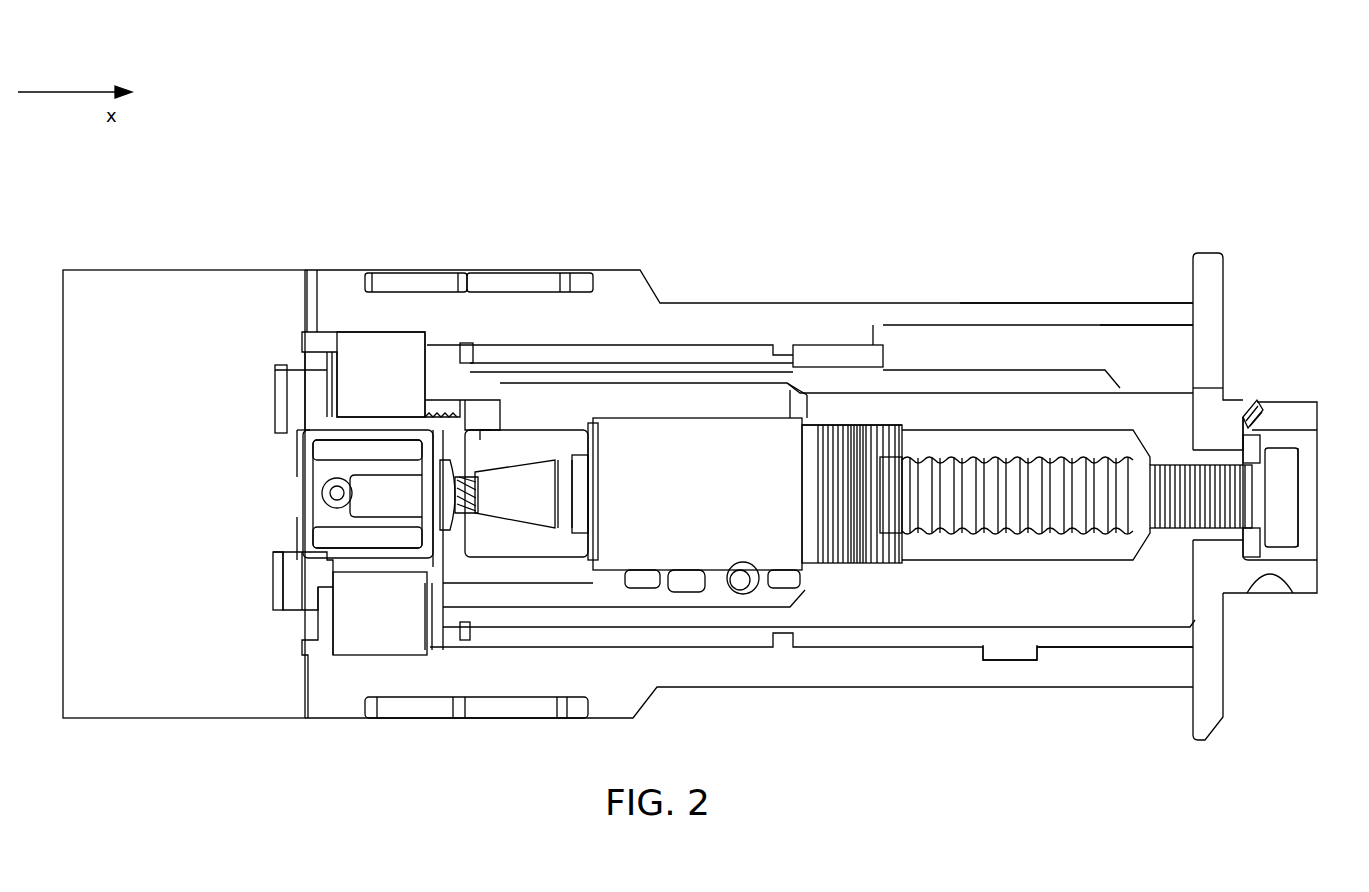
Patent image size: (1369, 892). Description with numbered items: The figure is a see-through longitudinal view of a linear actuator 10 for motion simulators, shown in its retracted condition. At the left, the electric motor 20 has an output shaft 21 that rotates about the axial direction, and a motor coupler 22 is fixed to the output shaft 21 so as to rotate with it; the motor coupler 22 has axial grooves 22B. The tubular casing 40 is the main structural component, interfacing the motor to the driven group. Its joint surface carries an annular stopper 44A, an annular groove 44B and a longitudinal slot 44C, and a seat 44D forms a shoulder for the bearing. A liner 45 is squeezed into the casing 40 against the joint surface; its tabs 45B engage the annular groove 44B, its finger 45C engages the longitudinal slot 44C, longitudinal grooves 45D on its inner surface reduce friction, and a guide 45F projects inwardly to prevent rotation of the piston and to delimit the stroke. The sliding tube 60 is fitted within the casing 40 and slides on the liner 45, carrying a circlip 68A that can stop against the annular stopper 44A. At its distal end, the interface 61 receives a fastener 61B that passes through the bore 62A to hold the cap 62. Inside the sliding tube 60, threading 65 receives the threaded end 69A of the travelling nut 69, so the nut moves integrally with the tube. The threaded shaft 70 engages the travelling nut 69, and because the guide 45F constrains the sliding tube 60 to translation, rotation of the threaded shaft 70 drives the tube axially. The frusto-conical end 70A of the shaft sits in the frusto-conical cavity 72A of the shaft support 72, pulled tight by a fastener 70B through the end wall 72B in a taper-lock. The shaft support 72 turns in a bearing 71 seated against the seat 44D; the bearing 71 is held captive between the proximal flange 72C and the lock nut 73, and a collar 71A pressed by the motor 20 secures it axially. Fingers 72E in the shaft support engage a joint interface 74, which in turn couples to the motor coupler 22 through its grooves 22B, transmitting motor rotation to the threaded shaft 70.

The linear actuator 10 is at (924, 148).
The electric motor 20 is at (150, 285).
The output shaft 21 is at (323, 513).
The motor coupler 22 is at (287, 567).
The axial grooves 22B is at (342, 450).
The casing 40 is at (810, 305).
The annular stopper 44A is at (790, 355).
The annular groove 44B is at (1043, 660).
The longitudinal slot 44C is at (1054, 328).
The seat 44D is at (425, 338).
The liner 45 is at (1175, 355).
The tabs 45B is at (1003, 655).
The finger 45C is at (1115, 330).
The longitudinal grooves 45D is at (845, 355).
The guide 45F is at (1178, 378).
The sliding tube 60 is at (950, 595).
The interface 61 is at (1247, 432).
The fastener 61B is at (1282, 530).
The cap 62 is at (1215, 718).
The bore 62A is at (1302, 553).
The threading 65 is at (915, 425).
The circlip 68A is at (470, 632).
The travelling nut 69 is at (700, 488).
The threaded end 69A is at (815, 560).
The threaded shaft 70 is at (1040, 522).
The frusto-conical end 70A is at (531, 494).
The fastener 70B is at (440, 525).
The bearing 71 is at (381, 374).
The collar 71A is at (312, 332).
The shaft support 72 is at (503, 425).
The frusto-conical cavity 72A is at (528, 469).
The end wall 72B is at (465, 515).
The proximal flange 72C is at (328, 410).
The fingers 72E is at (345, 455).
The lock nut 73 is at (457, 355).
The joint interface 74 is at (375, 552).